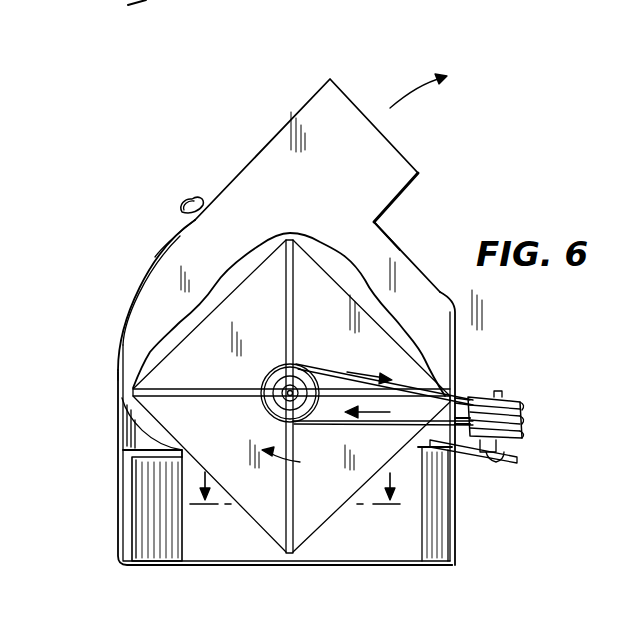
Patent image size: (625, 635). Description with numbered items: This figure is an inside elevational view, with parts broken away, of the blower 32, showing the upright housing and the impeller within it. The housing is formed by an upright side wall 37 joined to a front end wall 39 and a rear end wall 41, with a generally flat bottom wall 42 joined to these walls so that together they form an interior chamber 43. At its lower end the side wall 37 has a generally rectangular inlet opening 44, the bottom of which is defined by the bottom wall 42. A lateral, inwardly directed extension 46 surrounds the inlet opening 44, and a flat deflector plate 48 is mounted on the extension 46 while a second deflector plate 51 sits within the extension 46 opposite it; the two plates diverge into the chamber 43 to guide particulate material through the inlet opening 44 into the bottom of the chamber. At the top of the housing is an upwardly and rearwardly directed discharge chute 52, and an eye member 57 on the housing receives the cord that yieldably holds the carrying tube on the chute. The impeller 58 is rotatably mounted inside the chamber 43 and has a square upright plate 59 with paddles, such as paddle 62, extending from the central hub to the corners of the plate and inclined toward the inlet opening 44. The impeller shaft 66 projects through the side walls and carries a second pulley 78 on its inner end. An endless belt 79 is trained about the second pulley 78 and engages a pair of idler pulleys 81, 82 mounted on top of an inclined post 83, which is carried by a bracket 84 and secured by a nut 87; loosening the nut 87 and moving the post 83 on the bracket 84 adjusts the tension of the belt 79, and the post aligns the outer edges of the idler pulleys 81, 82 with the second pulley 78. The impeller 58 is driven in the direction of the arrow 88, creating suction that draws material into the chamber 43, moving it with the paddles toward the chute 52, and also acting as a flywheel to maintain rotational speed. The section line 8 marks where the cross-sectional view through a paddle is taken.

The section line 8- 8 is at (291, 486).
The blower 32 is at (105, 293).
The side wall 37 is at (140, 338).
The front end wall 39 is at (152, 262).
The rear end wall 41 is at (455, 330).
The bottom wall 42 is at (405, 566).
The interior chamber 43 is at (358, 310).
The inlet opening 44 is at (366, 534).
The extension 46 is at (118, 474).
The deflector plate 48 is at (150, 508).
The second deflector plate 51 is at (442, 532).
The discharge chute 52 is at (380, 157).
The eye member 57 is at (190, 200).
The impeller 58 is at (372, 268).
The square upright plate 59 is at (263, 497).
The paddle 62 is at (290, 532).
The impeller shaft 66 is at (286, 396).
The second pulley 78 is at (300, 372).
The endless belt 79 is at (466, 398).
The idler pulley 81 is at (516, 403).
The idler pulley 82 is at (510, 441).
The post 83 is at (500, 459).
The bracket 84 is at (466, 448).
The nut 87 is at (500, 395).
The arrow 88 is at (318, 443).